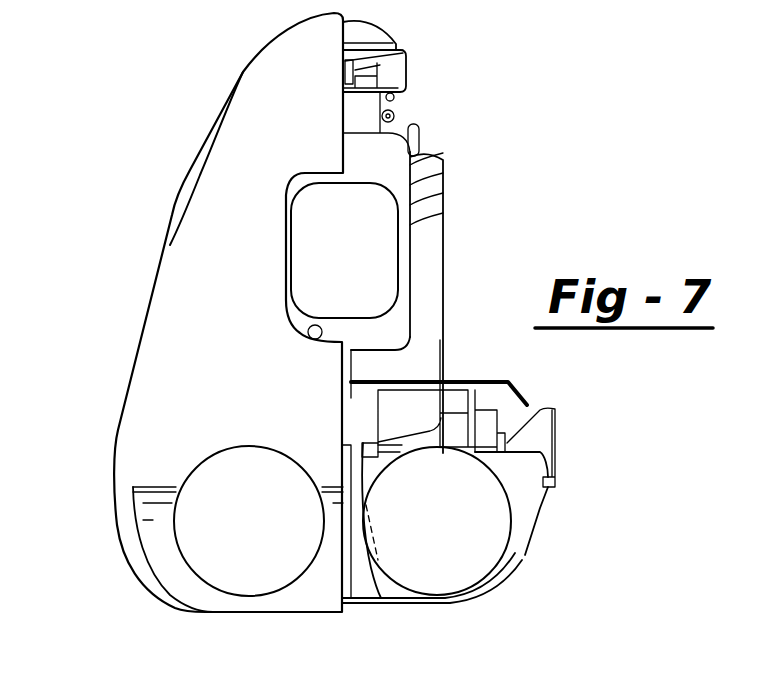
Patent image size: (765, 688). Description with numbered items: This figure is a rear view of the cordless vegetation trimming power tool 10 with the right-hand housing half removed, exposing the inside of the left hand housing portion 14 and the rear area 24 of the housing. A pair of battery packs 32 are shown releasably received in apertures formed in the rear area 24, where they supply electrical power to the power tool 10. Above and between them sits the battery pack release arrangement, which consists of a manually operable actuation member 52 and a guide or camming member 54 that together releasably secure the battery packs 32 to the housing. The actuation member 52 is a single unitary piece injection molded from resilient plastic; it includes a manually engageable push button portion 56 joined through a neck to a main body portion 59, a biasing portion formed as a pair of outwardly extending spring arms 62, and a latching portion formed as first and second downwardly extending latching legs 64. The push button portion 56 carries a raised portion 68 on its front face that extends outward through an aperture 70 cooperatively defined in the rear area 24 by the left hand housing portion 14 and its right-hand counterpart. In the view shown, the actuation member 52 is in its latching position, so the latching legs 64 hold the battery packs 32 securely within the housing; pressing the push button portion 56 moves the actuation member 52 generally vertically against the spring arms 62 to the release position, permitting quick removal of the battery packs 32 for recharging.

The power tool 10 is at (156, 116).
The left hand housing portion 14 is at (176, 272).
The rear area 24 is at (176, 380).
The battery packs 32 is at (230, 555).
The actuation member 52 is at (430, 208).
The camming member 54 is at (518, 556).
The push button portion 56 is at (380, 152).
The main body portion 59 is at (363, 412).
The spring arms 62 is at (462, 382).
The latching legs 64 is at (360, 604).
The raised portion 68 is at (383, 258).
The aperture 70 is at (314, 344).